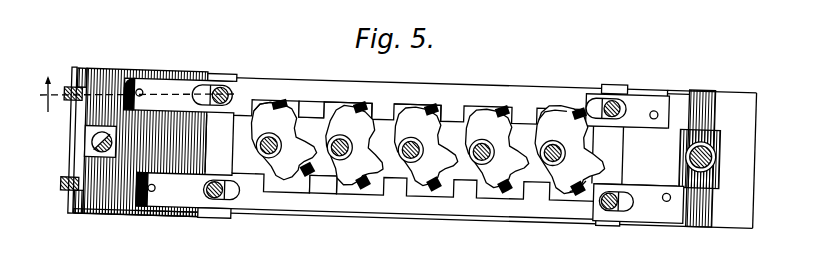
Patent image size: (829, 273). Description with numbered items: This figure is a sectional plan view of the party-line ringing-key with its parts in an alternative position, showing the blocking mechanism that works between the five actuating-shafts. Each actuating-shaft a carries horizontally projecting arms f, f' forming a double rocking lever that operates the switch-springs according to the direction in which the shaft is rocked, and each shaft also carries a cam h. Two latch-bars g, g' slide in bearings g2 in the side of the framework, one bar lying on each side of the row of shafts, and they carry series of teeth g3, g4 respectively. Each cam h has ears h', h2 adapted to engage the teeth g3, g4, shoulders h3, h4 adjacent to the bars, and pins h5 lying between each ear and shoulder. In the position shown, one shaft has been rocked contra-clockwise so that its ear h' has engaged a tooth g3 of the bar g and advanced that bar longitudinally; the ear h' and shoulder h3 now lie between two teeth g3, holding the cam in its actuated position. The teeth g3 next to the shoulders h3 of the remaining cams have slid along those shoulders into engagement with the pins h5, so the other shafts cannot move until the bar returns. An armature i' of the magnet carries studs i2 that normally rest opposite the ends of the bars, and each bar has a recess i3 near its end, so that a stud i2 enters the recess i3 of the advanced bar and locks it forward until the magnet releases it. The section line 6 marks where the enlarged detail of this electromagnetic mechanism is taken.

The section line 6 6 is at (129, 94).
The armature i' is at (120, 75).
The studs i2 is at (140, 89).
The recess i3 is at (155, 194).
The latch-bar g is at (396, 89).
The latch-bar g' is at (406, 211).
The bearings g2 is at (221, 213).
The teeth g3 is at (308, 108).
The teeth g4 is at (328, 185).
The cam h is at (431, 148).
The ear h' is at (415, 85).
The ear h2 is at (425, 188).
The shoulder h3 is at (265, 118).
The shoulder h4 is at (522, 180).
The pins h5 is at (432, 104).
The actuating-shaft a is at (425, 135).
The arm f is at (559, 223).
The arm f' is at (627, 92).